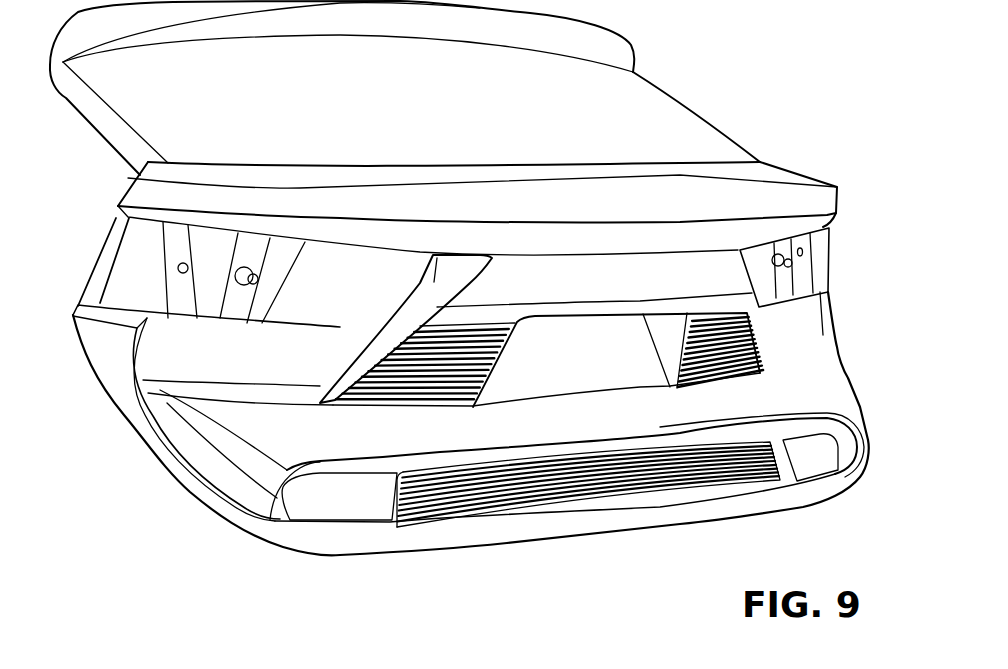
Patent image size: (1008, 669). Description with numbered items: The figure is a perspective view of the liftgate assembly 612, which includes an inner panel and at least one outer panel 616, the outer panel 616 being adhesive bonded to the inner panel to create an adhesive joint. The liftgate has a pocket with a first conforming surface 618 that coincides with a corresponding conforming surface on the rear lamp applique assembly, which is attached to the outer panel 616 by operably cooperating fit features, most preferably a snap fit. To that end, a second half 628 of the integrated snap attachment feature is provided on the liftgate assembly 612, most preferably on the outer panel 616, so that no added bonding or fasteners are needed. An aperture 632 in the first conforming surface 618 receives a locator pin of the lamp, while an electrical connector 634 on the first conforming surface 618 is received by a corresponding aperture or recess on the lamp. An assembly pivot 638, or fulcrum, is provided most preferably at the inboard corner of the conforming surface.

The liftgate assembly 612 is at (681, 72).
The outer panel 616 is at (160, 362).
The first conforming surface 618 is at (313, 326).
The second half of the integrated snap feature 628 is at (99, 261).
The aperture 632 is at (181, 273).
The electrical connector 634 is at (242, 286).
The assembly pivot 638 is at (441, 258).